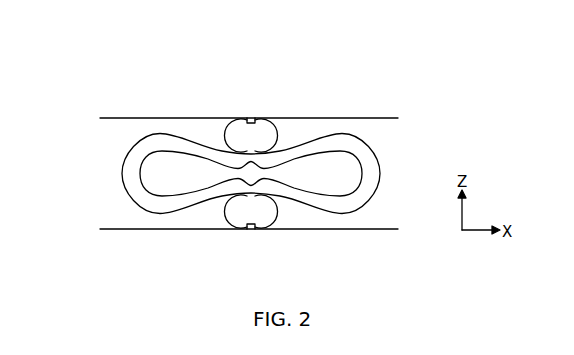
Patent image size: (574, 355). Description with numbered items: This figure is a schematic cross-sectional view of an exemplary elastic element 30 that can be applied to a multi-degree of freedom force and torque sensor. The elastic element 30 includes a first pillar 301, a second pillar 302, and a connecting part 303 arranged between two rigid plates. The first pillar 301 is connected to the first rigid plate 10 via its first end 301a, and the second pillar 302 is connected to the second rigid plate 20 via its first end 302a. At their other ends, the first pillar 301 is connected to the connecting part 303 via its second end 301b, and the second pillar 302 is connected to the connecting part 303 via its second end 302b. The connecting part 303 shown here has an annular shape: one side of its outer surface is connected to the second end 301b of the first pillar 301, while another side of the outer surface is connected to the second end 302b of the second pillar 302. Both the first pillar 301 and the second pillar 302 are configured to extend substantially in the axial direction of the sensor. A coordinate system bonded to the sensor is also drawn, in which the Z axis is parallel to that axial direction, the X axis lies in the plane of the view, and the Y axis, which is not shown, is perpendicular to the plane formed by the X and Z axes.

The first rigid plate 10 is at (383, 118).
The second rigid plate 20 is at (384, 229).
The elastic element 30 is at (128, 45).
The first pillar 301 is at (268, 111).
The first end of the first pillar 301a is at (249, 118).
The second end of the first pillar 301b is at (239, 135).
The second pillar 302 is at (277, 235).
The first end of the second pillar 302a is at (258, 229).
The second end of the second pillar 302b is at (237, 211).
The connecting part 303 is at (122, 172).